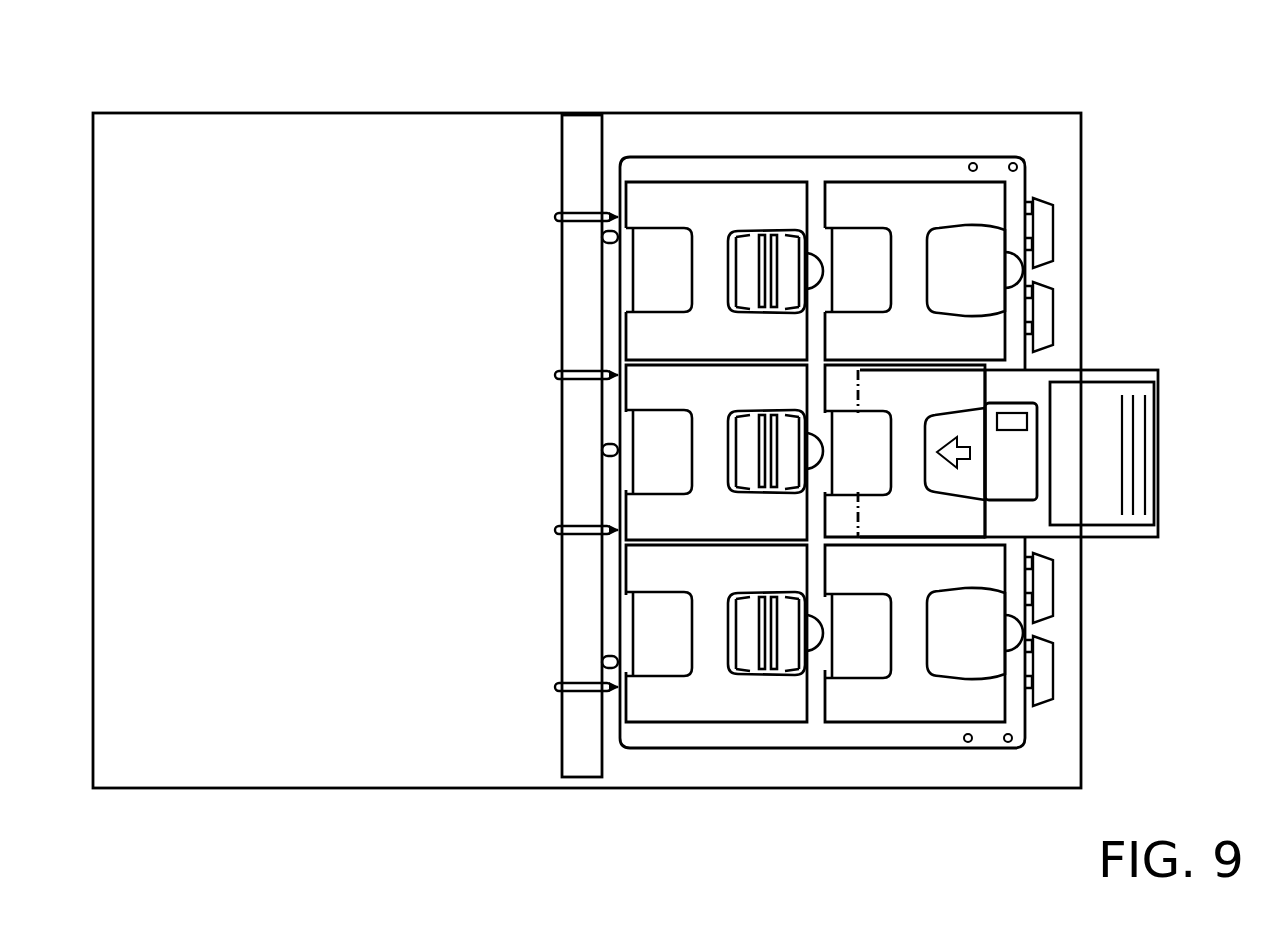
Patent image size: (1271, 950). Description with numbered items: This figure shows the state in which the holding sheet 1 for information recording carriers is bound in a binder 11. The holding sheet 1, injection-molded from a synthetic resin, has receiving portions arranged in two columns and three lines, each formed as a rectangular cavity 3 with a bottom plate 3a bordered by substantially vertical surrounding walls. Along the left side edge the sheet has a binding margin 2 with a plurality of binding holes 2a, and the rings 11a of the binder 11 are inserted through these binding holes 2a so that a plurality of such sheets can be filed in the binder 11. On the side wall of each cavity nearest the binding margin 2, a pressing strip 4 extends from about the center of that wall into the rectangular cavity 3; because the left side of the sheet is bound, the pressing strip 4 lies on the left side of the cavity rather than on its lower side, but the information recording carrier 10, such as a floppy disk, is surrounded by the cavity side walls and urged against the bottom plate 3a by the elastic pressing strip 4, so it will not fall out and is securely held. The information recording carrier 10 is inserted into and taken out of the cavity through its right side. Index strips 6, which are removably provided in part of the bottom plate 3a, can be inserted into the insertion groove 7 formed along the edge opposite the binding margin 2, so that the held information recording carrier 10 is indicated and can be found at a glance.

The holding sheet 1 is at (790, 140).
The binding margin 2 is at (572, 275).
The binding holes 2a is at (605, 200).
The rectangular cavity 3 is at (737, 176).
The bottom plate 3a is at (985, 195).
The pressing strip 4 is at (668, 245).
The index strip 6 is at (792, 237).
The insertion groove 7 is at (1035, 588).
The information recording carrier 10 is at (1140, 462).
The binder 11 is at (352, 148).
The rings 11a is at (608, 215).